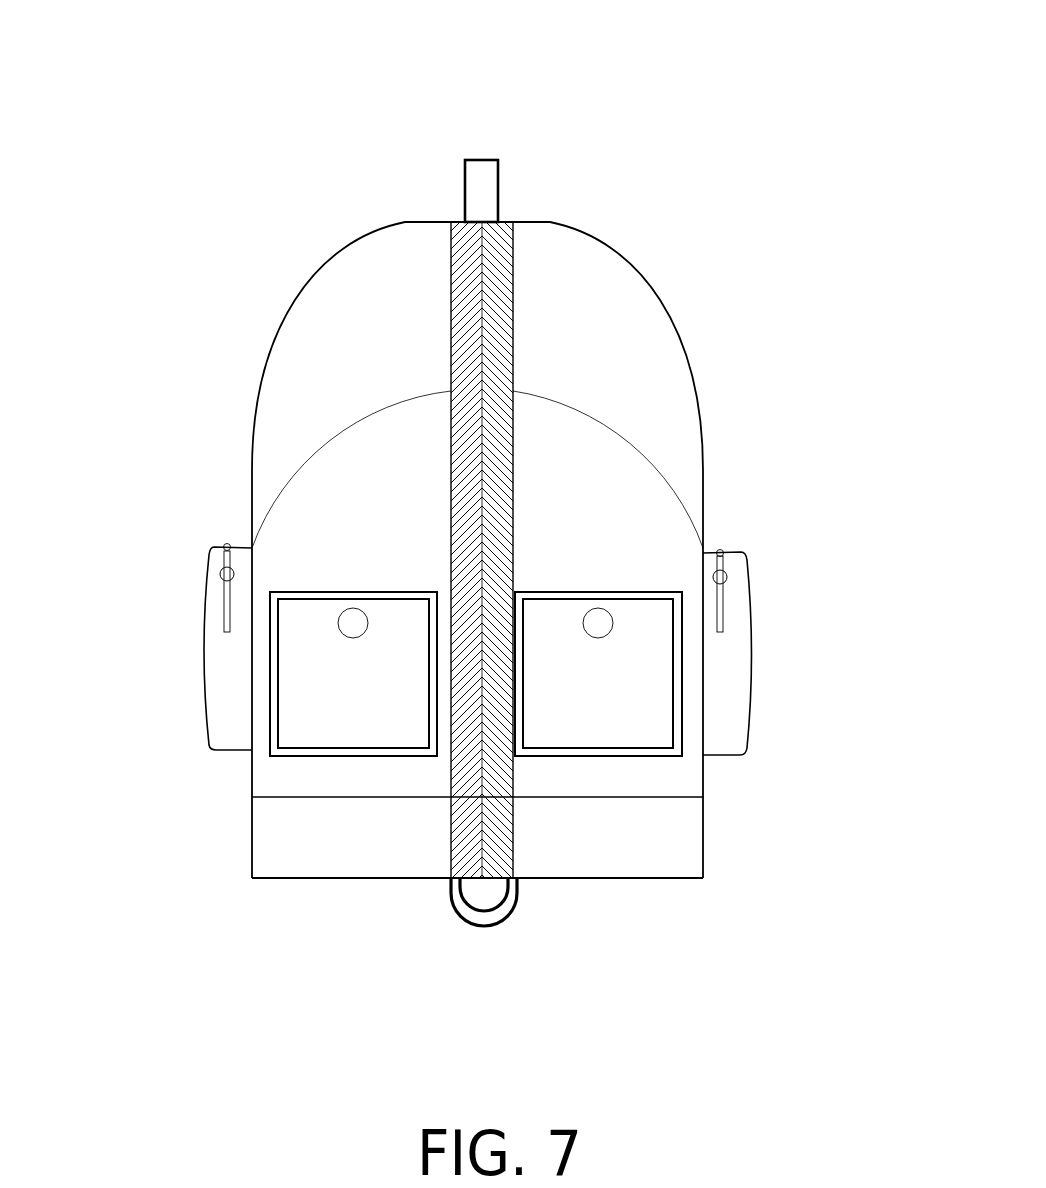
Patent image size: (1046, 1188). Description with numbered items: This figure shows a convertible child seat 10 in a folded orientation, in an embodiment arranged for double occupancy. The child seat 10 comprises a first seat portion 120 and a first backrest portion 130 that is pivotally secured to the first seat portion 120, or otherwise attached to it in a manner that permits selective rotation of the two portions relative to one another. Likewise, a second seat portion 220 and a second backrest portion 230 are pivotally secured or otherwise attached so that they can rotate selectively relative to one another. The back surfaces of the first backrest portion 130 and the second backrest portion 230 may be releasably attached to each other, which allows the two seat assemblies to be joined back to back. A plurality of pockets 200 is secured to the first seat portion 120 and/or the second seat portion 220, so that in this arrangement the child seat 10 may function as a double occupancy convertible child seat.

The convertible child seat 10 is at (406, 99).
The first seat portion 120 is at (338, 293).
The second seat portion 220 is at (643, 322).
The first backrest portion 130 is at (465, 305).
The second backrest portion 230 is at (490, 303).
The pockets 200 is at (297, 525).